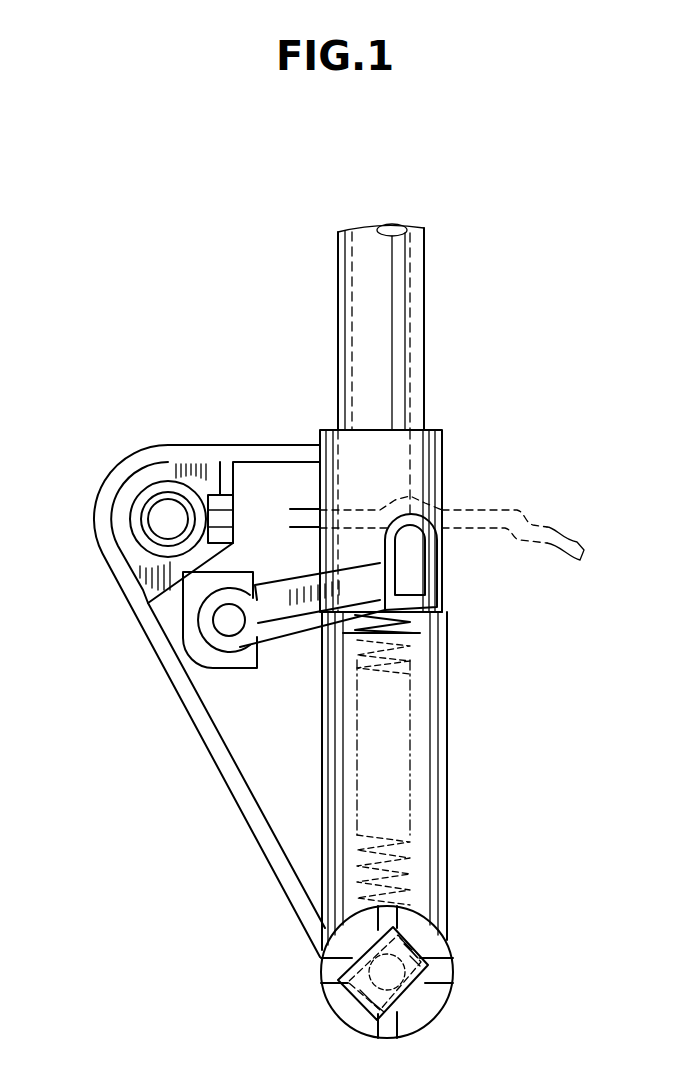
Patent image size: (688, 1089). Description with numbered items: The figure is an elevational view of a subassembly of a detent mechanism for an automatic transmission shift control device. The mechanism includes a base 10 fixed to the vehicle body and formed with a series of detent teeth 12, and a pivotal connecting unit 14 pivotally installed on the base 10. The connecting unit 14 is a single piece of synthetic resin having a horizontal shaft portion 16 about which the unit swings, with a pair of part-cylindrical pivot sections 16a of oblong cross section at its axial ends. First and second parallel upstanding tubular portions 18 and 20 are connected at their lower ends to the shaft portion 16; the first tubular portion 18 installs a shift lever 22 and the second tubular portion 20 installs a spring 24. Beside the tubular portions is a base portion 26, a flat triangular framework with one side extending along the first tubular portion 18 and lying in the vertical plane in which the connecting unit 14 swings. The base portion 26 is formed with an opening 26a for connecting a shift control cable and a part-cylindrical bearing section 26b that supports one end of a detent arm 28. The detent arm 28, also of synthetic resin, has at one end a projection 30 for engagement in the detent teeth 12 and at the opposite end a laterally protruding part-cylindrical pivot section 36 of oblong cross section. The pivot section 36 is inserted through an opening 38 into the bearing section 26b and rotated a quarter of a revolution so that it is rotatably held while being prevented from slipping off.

The base 10 is at (582, 535).
The detent teeth 12 is at (547, 527).
The pivotal connecting unit 14 is at (103, 472).
The horizontal shaft portion 16 is at (435, 1006).
The part-cylindrical pivot sections 16a is at (346, 1008).
The first upstanding tubular portion 18 is at (442, 440).
The second upstanding tubular portion 20 is at (420, 722).
The shift lever 22 is at (424, 323).
The spring 24 is at (413, 623).
The base portion 26 is at (232, 445).
The opening 26a is at (163, 503).
The part-cylindrical bearing section 26b is at (213, 622).
The detent arm 28 is at (290, 650).
The projection 30 is at (443, 512).
The part-cylindrical pivot section 36 is at (228, 632).
The opening 38 is at (259, 608).